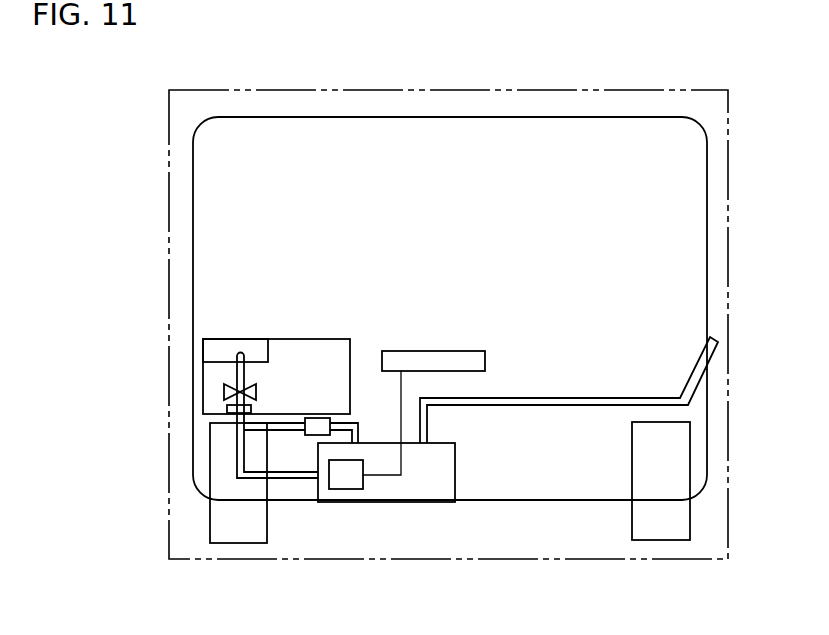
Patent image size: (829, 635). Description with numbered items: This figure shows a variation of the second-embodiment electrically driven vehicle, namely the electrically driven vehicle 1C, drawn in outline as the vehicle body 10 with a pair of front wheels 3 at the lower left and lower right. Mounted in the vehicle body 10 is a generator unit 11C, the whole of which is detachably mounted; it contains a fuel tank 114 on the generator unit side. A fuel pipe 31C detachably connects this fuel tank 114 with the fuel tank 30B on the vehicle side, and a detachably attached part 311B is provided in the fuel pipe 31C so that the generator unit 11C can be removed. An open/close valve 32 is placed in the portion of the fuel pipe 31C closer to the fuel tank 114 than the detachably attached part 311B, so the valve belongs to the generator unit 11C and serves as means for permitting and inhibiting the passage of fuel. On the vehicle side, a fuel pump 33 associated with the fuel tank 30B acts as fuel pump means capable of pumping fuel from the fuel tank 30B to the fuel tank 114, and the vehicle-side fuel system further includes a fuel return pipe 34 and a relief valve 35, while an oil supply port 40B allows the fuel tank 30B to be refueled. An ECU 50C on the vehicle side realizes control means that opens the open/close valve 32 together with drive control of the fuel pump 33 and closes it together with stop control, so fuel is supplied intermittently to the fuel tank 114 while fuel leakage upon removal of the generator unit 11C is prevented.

The electrically driven vehicle 1C is at (274, 90).
The vehicle body 10 is at (468, 117).
The generator unit 11C is at (186, 343).
The fuel tank on the generator unit side 114 is at (220, 353).
The open/close valve 32 is at (224, 391).
The detachably attached part 311B is at (227, 409).
The fuel pipe 31C is at (240, 448).
The fuel return pipe 34 is at (278, 427).
The relief valve 35 is at (315, 432).
The fuel pump 33 is at (348, 478).
The fuel tank on the vehicle side 30B is at (417, 483).
The ECU on the vehicle side 50C is at (463, 362).
The oil supply port 40B is at (715, 345).
The front wheels 3 is at (230, 520).